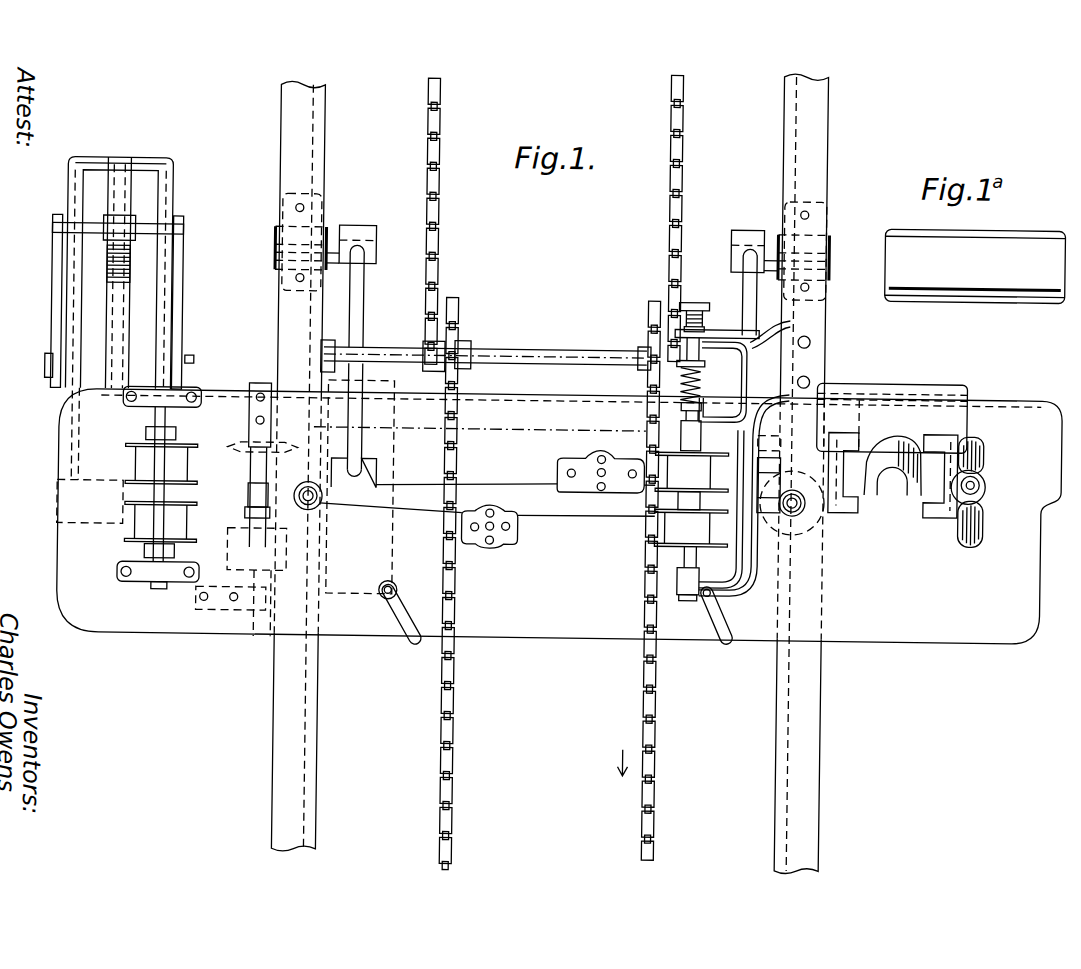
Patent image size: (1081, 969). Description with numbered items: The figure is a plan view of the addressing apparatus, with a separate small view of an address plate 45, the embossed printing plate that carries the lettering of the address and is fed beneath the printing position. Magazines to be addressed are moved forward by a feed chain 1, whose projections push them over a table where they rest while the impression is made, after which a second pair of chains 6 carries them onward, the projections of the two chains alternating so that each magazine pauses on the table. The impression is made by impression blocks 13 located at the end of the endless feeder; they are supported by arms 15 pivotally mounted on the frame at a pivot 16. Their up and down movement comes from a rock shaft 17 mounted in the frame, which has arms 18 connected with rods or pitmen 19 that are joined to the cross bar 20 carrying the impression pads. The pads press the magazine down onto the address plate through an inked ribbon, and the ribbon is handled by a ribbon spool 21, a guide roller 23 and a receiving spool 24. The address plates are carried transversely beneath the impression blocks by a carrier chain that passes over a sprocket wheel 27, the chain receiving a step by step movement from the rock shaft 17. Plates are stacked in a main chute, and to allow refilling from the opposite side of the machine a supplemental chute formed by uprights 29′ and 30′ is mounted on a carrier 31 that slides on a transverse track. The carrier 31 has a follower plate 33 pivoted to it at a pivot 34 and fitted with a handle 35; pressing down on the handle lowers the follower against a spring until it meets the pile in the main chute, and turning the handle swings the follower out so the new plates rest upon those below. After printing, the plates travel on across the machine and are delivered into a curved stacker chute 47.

In FIG. 1, the feed chain 1 is at (438, 231).
In FIG. 1, the second pair of chains 6 is at (464, 699).
In FIG. 1, the impression block 13 is at (567, 465).
In FIG. 1, the arms 15 is at (354, 309).
In FIG. 1, the pivot 16 is at (327, 251).
In FIG. 1, the rock shaft 17 is at (504, 429).
In FIG. 1, the arms 18 is at (387, 450).
In FIG. 1, the rods or pitmen 19 is at (312, 503).
In FIG. 1, the cross bar 20 is at (518, 493).
In FIG. 1, the ribbon spool 21 is at (706, 473).
In FIG. 1, the guide roller 23 is at (259, 464).
In FIG. 1, the receiving spool 24 is at (108, 546).
In FIG. 1, the sprocket wheel 27 is at (236, 451).
In FIG. 1, the upright 29′ is at (938, 510).
In FIG. 1, the upright 30′ is at (850, 504).
In FIG. 1, the carrier 31 is at (961, 385).
In FIG. 1, the follower plate 33 is at (905, 466).
In FIG. 1, the pivot 34 is at (980, 480).
In FIG. 1, the handle 35 is at (975, 520).
In FIG. 1A, the address plate 45 is at (987, 278).
In FIG. 1, the stacker chute 47 is at (72, 390).